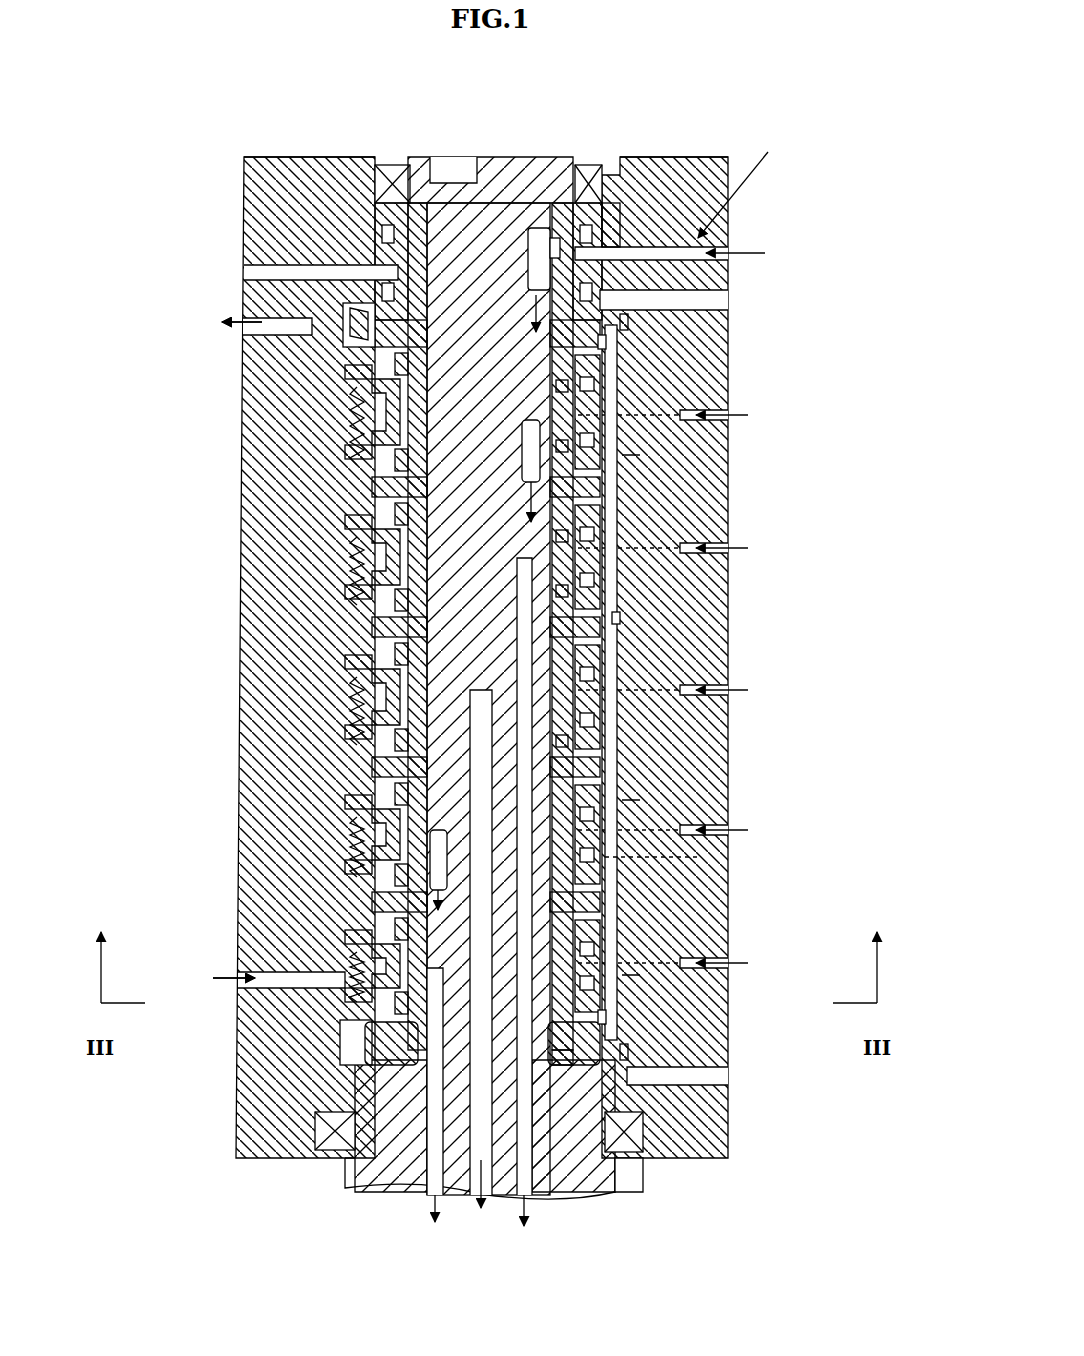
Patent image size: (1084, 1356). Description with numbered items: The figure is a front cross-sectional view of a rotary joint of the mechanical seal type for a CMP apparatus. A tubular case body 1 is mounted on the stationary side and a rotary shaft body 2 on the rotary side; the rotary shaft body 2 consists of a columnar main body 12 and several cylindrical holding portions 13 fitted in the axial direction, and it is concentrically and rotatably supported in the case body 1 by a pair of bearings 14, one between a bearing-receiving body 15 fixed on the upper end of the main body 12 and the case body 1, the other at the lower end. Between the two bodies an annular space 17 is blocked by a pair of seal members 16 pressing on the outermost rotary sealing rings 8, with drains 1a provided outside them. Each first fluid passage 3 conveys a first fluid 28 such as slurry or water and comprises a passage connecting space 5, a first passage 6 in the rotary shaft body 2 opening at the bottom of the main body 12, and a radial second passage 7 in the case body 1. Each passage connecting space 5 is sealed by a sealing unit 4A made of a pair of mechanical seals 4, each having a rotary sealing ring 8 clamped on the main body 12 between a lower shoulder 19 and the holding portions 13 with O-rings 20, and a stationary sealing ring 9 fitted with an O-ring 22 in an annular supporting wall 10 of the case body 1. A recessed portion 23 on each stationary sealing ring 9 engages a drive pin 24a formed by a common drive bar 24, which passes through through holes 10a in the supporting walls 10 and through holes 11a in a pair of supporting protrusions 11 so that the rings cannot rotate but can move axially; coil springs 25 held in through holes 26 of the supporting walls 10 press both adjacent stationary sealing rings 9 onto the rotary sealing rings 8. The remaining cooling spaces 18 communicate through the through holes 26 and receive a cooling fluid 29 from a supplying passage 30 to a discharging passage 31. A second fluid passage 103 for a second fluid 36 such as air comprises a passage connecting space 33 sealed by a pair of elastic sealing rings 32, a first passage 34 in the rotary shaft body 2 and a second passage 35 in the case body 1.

The case body 1 is at (660, 253).
The drain 1a is at (700, 300).
The rotary shaft body 2 is at (640, 1190).
The first fluid passage 3 is at (400, 1130).
The mechanical seal 4 is at (345, 402).
The sealing unit 4A is at (640, 355).
The passage connecting space 5 is at (400, 418).
The first passage 6 is at (532, 440).
The second passage 7 is at (700, 400).
The rotary sealing ring 8 is at (425, 338).
The stationary sealing ring 9 is at (420, 362).
The supporting wall 10 is at (524, 450).
The through hole 10a is at (640, 455).
The supporting protrusion 11 is at (548, 378).
The through hole 11a is at (628, 345).
The main body 12 is at (462, 230).
The holding portion 13 is at (372, 245).
The bearing 14 is at (392, 163).
The bearing-receiving body 15 is at (515, 157).
The seal member 16 is at (640, 322).
The annular space 17 is at (620, 618).
The cooling space 18 is at (352, 322).
The lower shoulder 19 is at (355, 1140).
The O-ring 20 is at (520, 585).
The O-ring 22 is at (405, 405).
The recessed portion 23 is at (700, 857).
The drive bar 24 is at (620, 580).
The drive pin 24a is at (640, 383).
The coil spring 25 is at (347, 425).
The through hole 26 is at (347, 458).
The first fluid 28 is at (748, 416).
The cooling fluid 29 is at (218, 322).
The supplying passage 30 is at (300, 985).
The discharging passage 31 is at (312, 327).
The elastic sealing ring 32 is at (590, 232).
The passage connecting space 33 is at (528, 268).
The first passage 34 is at (540, 228).
The second passage 35 is at (606, 225).
The second fluid 36 is at (722, 252).
The second fluid passage 103 is at (747, 182).